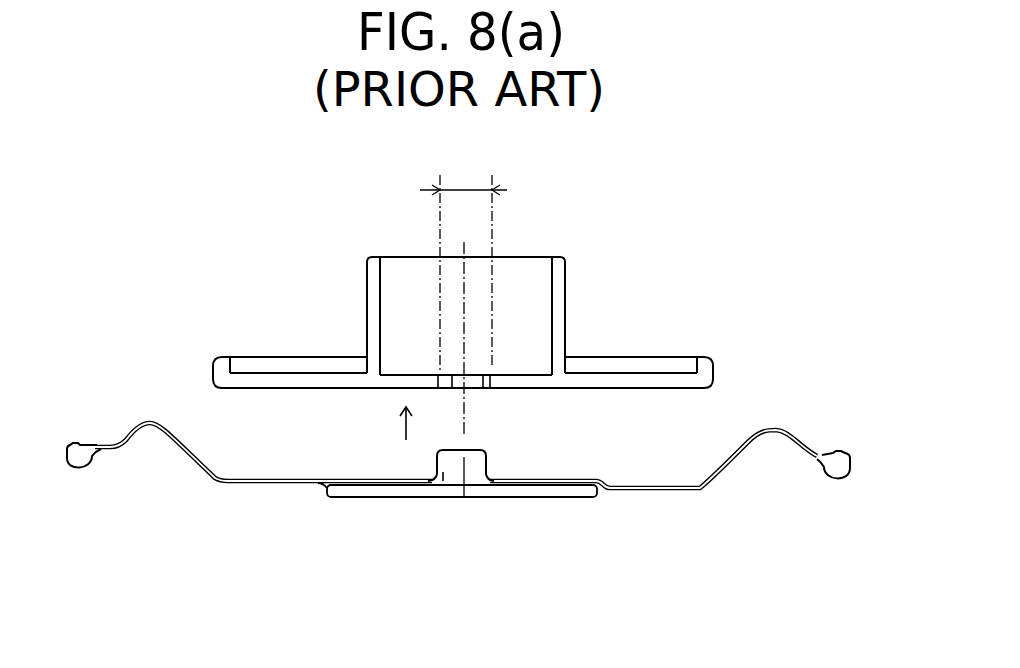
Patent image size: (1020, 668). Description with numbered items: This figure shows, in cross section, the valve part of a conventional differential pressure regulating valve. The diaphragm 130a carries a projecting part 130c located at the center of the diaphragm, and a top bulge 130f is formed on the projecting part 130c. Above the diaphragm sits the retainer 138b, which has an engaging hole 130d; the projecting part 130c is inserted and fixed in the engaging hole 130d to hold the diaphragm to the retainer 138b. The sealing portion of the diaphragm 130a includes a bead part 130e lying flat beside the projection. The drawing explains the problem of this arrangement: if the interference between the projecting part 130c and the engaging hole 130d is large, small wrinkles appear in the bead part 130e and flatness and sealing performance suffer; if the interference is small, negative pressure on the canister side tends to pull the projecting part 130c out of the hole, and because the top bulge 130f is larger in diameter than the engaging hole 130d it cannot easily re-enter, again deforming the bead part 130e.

The retainer 138b is at (605, 310).
The diaphragm 130a is at (780, 432).
The projecting part 130c is at (447, 475).
The engaging hole 130d is at (447, 378).
The bead part 130e is at (325, 488).
The top bulge 130f is at (487, 458).